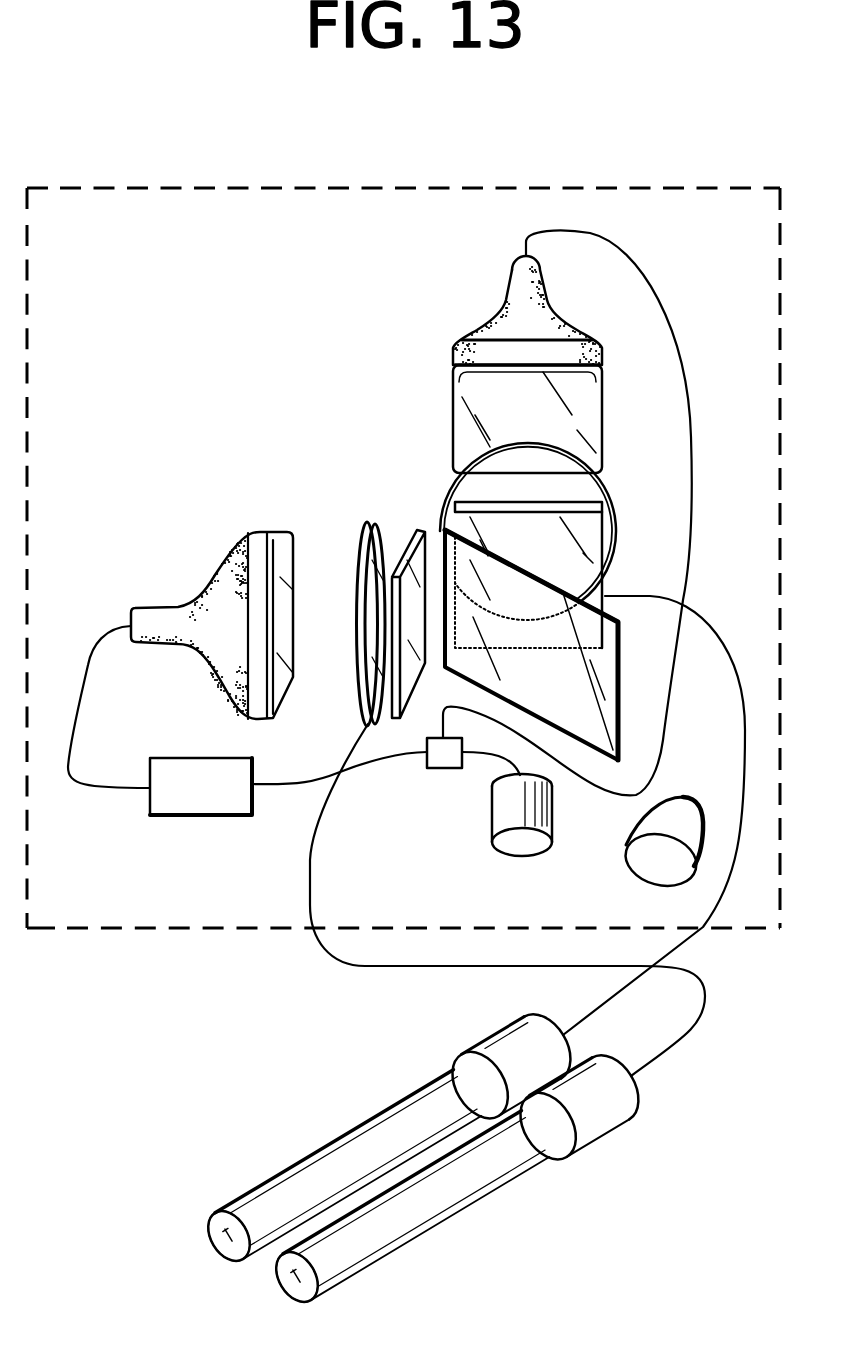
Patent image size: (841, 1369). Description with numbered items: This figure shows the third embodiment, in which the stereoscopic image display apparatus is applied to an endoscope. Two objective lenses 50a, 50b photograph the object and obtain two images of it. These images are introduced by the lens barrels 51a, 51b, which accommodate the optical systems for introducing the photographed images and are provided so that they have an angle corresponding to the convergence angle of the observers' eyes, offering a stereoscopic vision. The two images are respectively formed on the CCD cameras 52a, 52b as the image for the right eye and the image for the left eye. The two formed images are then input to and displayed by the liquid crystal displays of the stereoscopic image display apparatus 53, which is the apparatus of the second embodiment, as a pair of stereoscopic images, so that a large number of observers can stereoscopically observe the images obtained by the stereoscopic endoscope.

The stereoscopic image display apparatus 53 is at (118, 928).
The objective lens 50a is at (222, 1234).
The objective lens 50b is at (293, 1284).
The lens barrel 51a is at (323, 1155).
The lens barrel 51b is at (397, 1233).
The CCD camera 52a is at (500, 1031).
The CCD camera 52b is at (600, 1125).